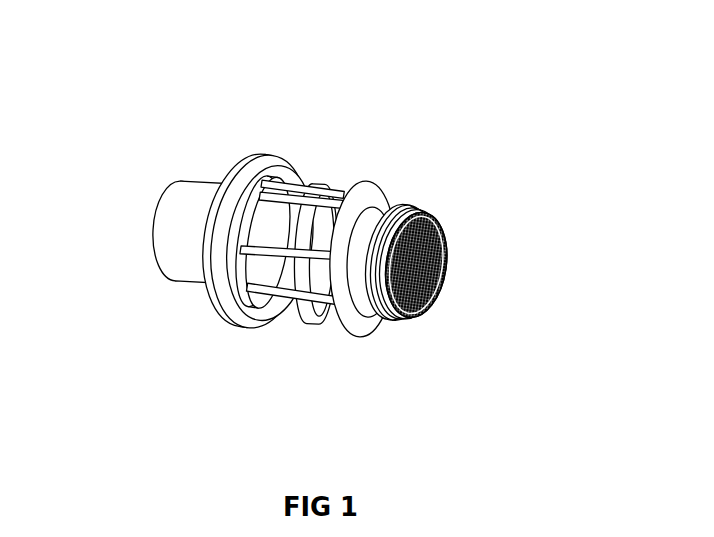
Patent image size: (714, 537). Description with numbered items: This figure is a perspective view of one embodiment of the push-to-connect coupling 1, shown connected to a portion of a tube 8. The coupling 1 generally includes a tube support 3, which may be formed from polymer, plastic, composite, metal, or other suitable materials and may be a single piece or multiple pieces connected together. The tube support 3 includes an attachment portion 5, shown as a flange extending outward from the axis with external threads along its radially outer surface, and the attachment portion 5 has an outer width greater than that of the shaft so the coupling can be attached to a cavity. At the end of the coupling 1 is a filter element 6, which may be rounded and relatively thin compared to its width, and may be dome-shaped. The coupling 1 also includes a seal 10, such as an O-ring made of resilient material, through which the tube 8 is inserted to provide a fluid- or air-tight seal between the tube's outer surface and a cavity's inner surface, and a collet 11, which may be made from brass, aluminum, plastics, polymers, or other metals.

The push-to-connect coupling 1 is at (311, 225).
The tube support 3 is at (365, 280).
The attachment portion 5 is at (406, 318).
The filter element 6 is at (449, 266).
The tube 8 is at (174, 228).
The seal 10 is at (383, 196).
The collet 11 is at (244, 322).